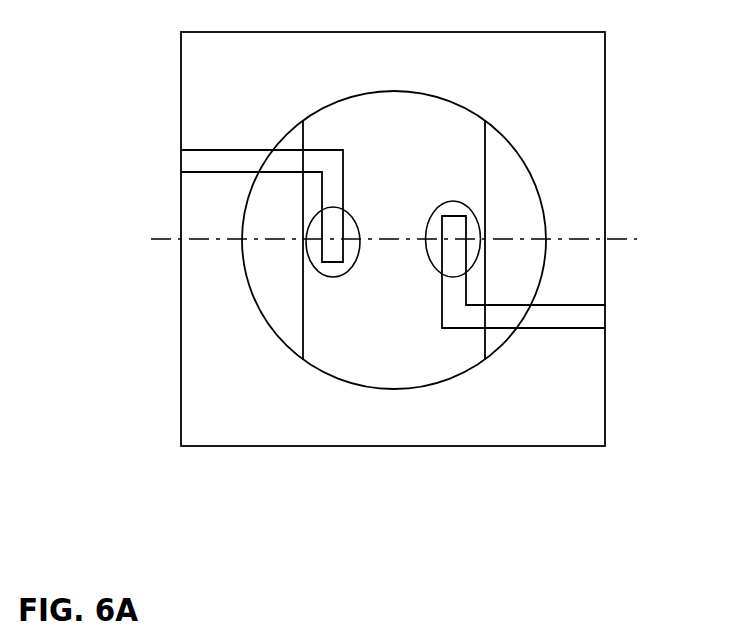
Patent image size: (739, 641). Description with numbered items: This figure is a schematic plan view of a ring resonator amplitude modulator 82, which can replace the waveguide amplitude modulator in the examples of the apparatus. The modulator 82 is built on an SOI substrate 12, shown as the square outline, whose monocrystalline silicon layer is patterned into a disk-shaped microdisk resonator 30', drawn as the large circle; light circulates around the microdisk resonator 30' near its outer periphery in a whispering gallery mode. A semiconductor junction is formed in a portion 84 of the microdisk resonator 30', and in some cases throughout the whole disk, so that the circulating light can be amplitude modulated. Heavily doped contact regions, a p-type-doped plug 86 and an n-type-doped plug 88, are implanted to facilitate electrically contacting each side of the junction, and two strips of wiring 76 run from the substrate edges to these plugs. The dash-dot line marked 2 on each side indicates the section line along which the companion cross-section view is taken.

The section line 2- 2 is at (151, 239).
The SOI substrate 12 is at (236, 418).
The microdisk resonator 30' is at (379, 240).
The wiring 76 is at (222, 173).
The ring resonator amplitude modulator 82 is at (580, 478).
The portion of the microdisk resonator 84 is at (403, 125).
The p-type-doped plug 86 is at (351, 268).
The n-type-doped plug 88 is at (434, 212).